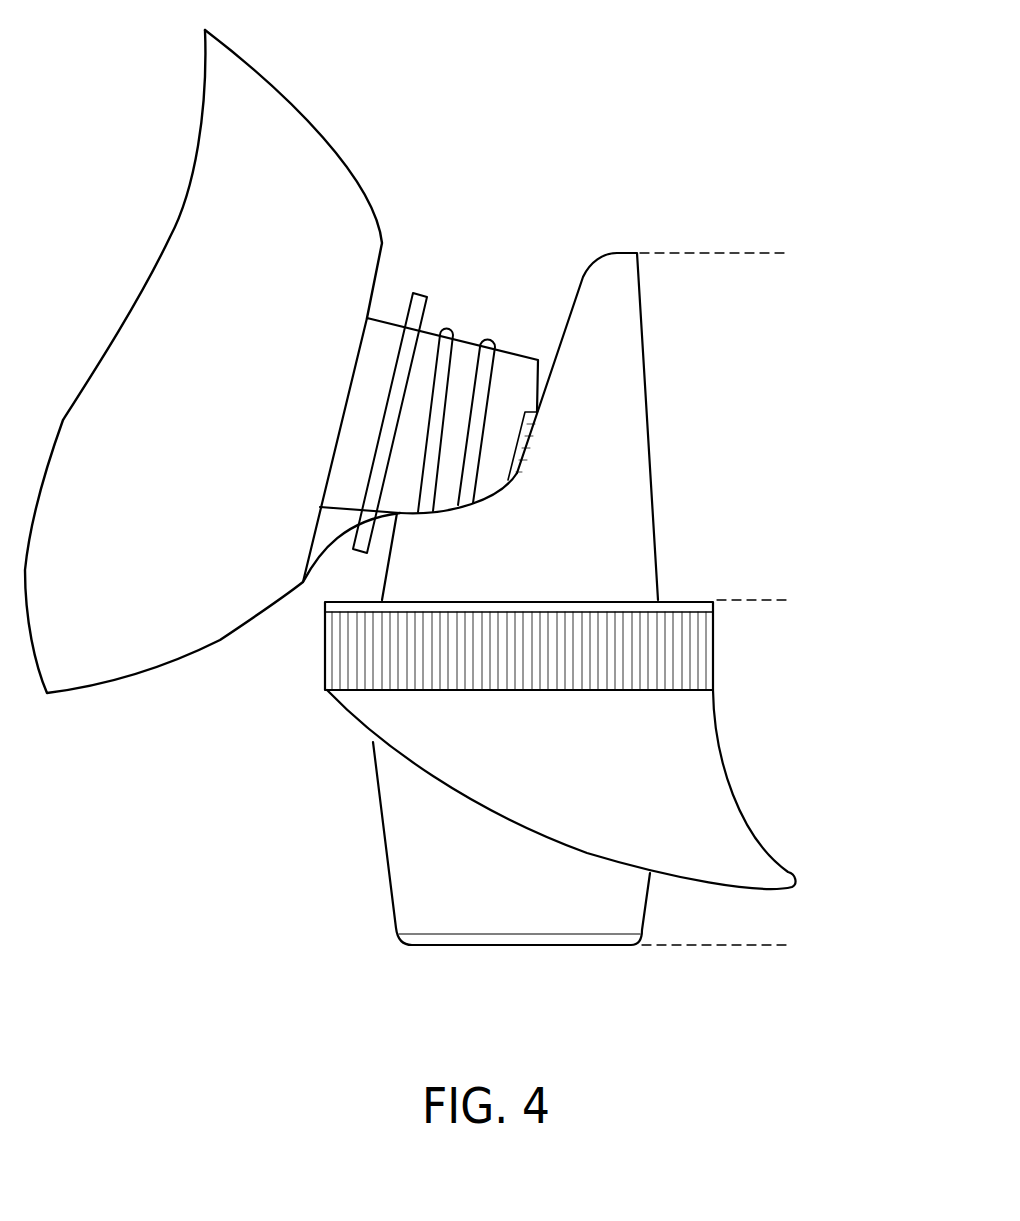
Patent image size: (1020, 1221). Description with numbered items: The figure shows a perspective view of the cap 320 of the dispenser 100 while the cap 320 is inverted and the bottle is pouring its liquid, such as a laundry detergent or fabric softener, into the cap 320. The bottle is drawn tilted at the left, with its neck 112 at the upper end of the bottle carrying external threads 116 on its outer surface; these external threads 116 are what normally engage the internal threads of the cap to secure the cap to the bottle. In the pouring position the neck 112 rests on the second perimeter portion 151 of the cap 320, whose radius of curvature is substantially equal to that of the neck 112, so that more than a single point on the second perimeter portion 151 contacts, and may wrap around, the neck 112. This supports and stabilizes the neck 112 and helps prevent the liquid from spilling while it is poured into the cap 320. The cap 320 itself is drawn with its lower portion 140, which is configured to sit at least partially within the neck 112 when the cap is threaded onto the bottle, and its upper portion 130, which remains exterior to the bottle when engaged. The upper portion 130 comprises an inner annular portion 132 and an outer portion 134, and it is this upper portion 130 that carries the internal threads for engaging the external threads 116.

The dispenser 100 is at (298, 100).
The neck 112 is at (382, 316).
The external threads 116 is at (448, 326).
The second perimeter portion 151 is at (303, 582).
The cap 320 is at (646, 232).
The lower portion 140 is at (788, 253).
The upper portion 130 is at (787, 600).
The outer portion 134 is at (743, 807).
The inner annular portion 132 is at (650, 897).